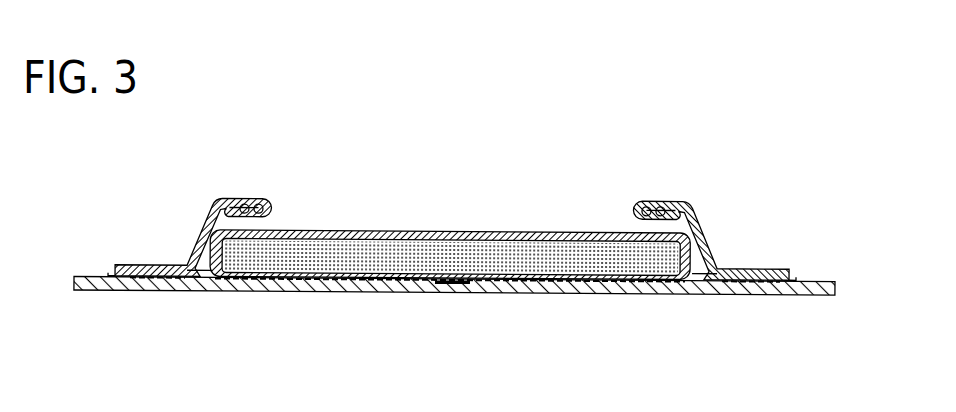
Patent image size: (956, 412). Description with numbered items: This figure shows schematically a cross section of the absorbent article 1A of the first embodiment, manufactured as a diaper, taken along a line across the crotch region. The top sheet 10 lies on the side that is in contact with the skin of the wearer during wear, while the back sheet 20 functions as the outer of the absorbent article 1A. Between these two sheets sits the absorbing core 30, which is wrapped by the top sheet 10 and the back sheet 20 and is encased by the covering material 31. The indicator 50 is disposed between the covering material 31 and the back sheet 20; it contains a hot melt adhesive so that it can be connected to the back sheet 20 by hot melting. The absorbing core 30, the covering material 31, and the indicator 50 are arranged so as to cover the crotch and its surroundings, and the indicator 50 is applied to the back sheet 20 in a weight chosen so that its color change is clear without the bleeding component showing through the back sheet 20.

The battery module / laminated battery assembly 1A is at (667, 140).
The top sheet 10 is at (572, 230).
The back sheet 20 is at (573, 296).
The absorbing core 30 is at (327, 230).
The covering material 31 is at (452, 230).
The indicator 50 is at (445, 288).